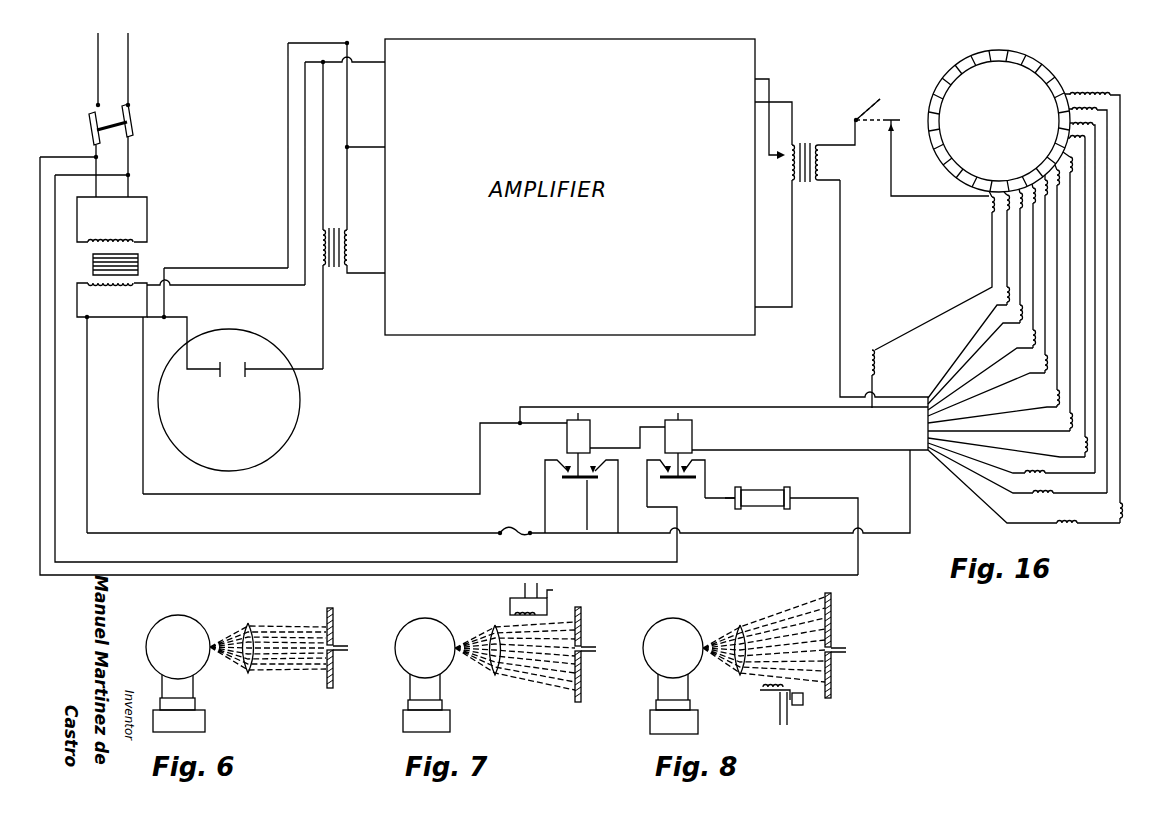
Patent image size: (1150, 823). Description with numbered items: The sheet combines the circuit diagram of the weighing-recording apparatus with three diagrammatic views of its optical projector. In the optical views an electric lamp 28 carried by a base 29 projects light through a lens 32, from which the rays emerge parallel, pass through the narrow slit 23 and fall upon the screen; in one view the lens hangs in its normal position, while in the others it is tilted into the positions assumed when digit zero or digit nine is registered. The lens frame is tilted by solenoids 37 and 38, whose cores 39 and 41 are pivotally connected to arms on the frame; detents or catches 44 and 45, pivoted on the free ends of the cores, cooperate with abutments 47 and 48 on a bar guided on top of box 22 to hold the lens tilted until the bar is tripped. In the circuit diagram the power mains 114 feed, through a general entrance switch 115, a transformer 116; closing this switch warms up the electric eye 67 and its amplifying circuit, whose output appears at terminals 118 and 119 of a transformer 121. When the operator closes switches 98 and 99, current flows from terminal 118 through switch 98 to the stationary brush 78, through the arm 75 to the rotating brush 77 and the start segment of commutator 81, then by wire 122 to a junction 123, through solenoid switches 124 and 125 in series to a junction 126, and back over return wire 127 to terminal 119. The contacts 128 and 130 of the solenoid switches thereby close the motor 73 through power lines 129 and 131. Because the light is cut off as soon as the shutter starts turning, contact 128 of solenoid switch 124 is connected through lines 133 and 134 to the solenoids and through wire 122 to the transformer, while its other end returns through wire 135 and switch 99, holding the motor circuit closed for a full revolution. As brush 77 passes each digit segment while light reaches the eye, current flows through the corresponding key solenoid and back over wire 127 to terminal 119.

In FIG. 16, the power mains 114 is at (100, 78).
In FIG. 16, the general entrance switch 115 is at (130, 132).
In FIG. 16, the transformer 116 is at (140, 262).
In FIG. 16, the electric eye 67 is at (238, 413).
In FIG. 16, the transformer terminal 118 is at (836, 150).
In FIG. 16, the transformer terminal 119 is at (830, 181).
In FIG. 16, the transformer 121 is at (806, 184).
In FIG. 16, the return wire 127 is at (843, 284).
In FIG. 16, the switch 98 is at (882, 99).
In FIG. 16, the stationary brush 78 is at (893, 168).
In FIG. 16, the arm 75 is at (912, 198).
In FIG. 16, the brush 77 is at (985, 196).
In FIG. 16, the commutator 81 is at (1034, 74).
In FIG. 16, the wire 122 is at (318, 493).
In FIG. 16, the solenoid 38 is at (983, 290).
In FIG. 8, the solenoid 38 is at (768, 692).
In FIG. 16, the solenoid 37 is at (1124, 520).
In FIG. 7, the solenoid 37 is at (510, 606).
In FIG. 16, the junction 126 is at (908, 450).
In FIG. 16, the line 134 is at (800, 448).
In FIG. 16, the junction 123 is at (518, 421).
In FIG. 16, the solenoid switch 124 is at (570, 434).
In FIG. 16, the contact 128 is at (576, 482).
In FIG. 16, the solenoid switch 125 is at (690, 440).
In FIG. 16, the contact 130 is at (672, 479).
In FIG. 16, the motor 73 is at (750, 506).
In FIG. 16, the power line 129 is at (285, 573).
In FIG. 16, the power line 131 is at (400, 561).
In FIG. 16, the line 133 is at (767, 536).
In FIG. 16, the switch 99 is at (500, 531).
In FIG. 16, the wire 135 is at (553, 536).
In FIG. 6, the electric lamp 28 is at (190, 655).
In FIG. 7, the electric lamp 28 is at (437, 656).
In FIG. 8, the electric lamp 28 is at (685, 656).
In FIG. 6, the base 29 is at (195, 722).
In FIG. 7, the base 29 is at (440, 726).
In FIG. 8, the base 29 is at (688, 724).
In FIG. 6, the lens 32 is at (252, 626).
In FIG. 7, the lens 32 is at (492, 676).
In FIG. 8, the lens 32 is at (746, 628).
In FIG. 6, the box 22 is at (336, 690).
In FIG. 7, the box 22 is at (585, 693).
In FIG. 8, the box 22 is at (836, 694).
In FIG. 6, the slit 23 is at (336, 648).
In FIG. 7, the slit 23 is at (584, 650).
In FIG. 8, the slit 23 is at (836, 651).
In FIG. 7, the core 39 is at (536, 617).
In FIG. 7, the catch 44 is at (553, 593).
In FIG. 7, the abutment 47 is at (538, 593).
In FIG. 8, the core 41 is at (795, 688).
In FIG. 8, the catch 45 is at (805, 702).
In FIG. 8, the abutment 48 is at (795, 722).